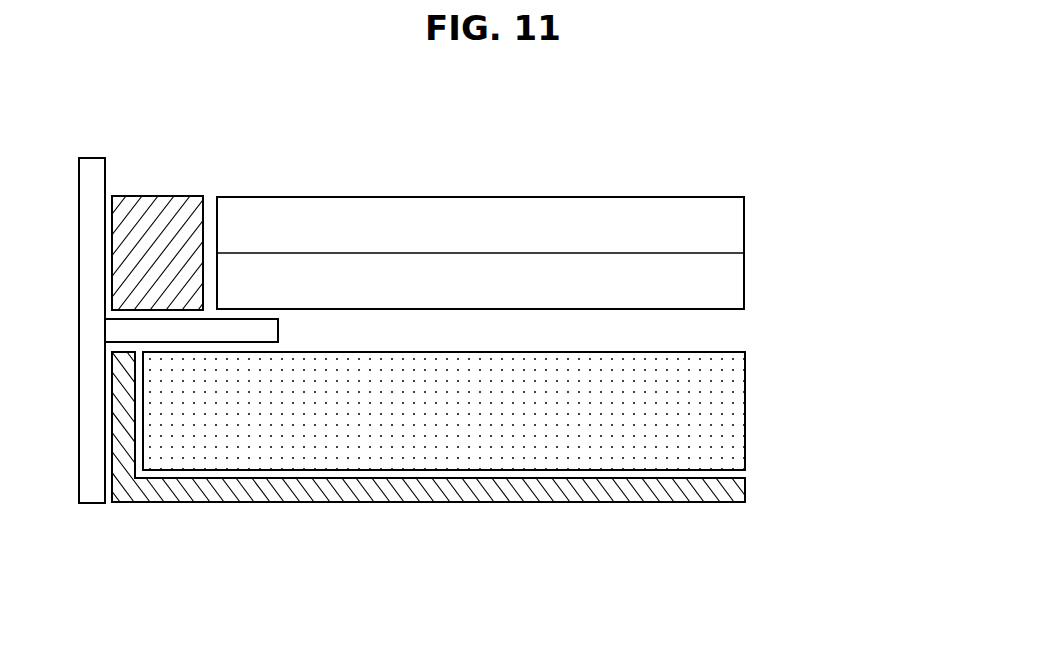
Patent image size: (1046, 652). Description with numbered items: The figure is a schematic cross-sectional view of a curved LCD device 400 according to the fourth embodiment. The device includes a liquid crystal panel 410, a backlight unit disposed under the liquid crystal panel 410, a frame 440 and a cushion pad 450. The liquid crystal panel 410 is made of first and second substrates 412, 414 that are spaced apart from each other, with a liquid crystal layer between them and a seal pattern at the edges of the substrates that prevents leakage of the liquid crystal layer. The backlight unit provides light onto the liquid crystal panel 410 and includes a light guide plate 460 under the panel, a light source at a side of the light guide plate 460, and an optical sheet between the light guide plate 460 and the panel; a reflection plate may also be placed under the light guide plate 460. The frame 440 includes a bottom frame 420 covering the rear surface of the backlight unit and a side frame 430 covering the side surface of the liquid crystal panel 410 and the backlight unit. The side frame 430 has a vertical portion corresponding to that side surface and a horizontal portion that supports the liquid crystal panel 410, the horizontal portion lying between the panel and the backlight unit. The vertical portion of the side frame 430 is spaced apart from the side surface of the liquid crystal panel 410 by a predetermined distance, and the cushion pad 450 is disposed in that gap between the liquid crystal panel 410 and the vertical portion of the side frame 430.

The curved LCD device 400 is at (448, 79).
The liquid crystal panel 410 is at (578, 253).
The first substrate 412 is at (717, 290).
The second substrate 414 is at (717, 229).
The bottom frame 420 is at (85, 588).
The side frame 430 is at (93, 494).
The frame 440 is at (427, 401).
The cushion pad 450 is at (160, 217).
The light guide plate 460 is at (718, 420).